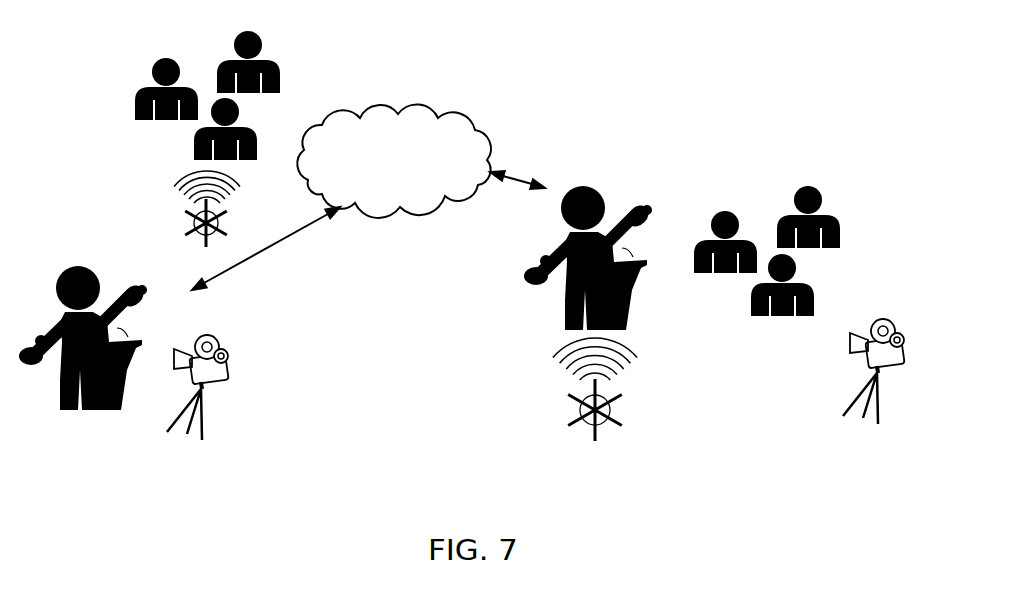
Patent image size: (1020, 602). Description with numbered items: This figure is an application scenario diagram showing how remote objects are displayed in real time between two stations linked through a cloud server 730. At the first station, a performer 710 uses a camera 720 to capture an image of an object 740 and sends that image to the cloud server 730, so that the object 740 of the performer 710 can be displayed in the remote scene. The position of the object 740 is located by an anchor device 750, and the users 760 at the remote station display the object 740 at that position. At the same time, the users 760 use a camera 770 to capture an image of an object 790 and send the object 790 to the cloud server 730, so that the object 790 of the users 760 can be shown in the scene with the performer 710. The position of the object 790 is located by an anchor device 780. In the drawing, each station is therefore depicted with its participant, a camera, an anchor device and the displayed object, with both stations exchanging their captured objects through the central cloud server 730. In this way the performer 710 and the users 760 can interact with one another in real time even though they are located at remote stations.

The performer 710 is at (62, 400).
The camera 720 is at (213, 383).
The cloud server 730 is at (410, 208).
The object 740 is at (540, 283).
The anchor device 750 is at (582, 413).
The users 760 is at (768, 318).
The camera 770 is at (883, 367).
The anchor device 780 is at (193, 222).
The object 790 is at (135, 108).